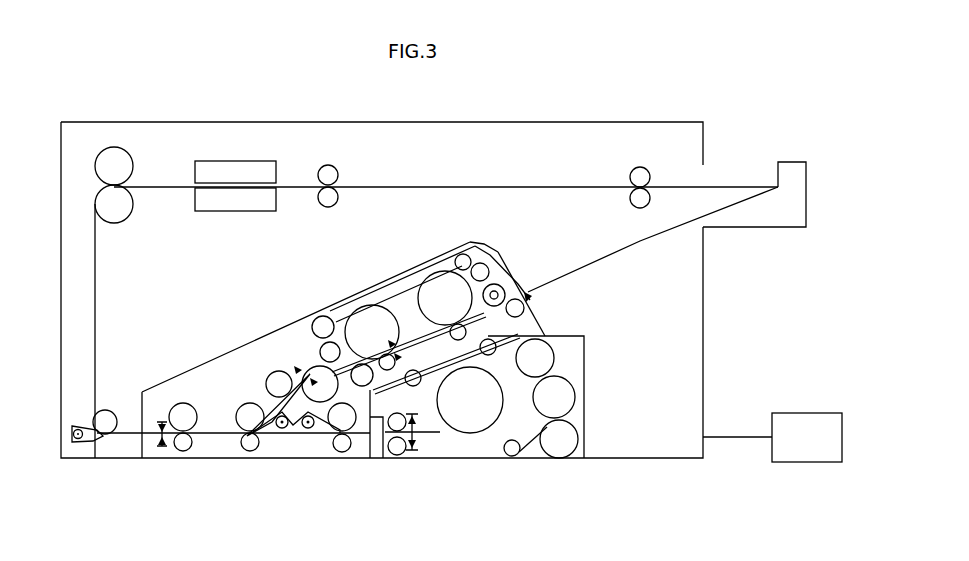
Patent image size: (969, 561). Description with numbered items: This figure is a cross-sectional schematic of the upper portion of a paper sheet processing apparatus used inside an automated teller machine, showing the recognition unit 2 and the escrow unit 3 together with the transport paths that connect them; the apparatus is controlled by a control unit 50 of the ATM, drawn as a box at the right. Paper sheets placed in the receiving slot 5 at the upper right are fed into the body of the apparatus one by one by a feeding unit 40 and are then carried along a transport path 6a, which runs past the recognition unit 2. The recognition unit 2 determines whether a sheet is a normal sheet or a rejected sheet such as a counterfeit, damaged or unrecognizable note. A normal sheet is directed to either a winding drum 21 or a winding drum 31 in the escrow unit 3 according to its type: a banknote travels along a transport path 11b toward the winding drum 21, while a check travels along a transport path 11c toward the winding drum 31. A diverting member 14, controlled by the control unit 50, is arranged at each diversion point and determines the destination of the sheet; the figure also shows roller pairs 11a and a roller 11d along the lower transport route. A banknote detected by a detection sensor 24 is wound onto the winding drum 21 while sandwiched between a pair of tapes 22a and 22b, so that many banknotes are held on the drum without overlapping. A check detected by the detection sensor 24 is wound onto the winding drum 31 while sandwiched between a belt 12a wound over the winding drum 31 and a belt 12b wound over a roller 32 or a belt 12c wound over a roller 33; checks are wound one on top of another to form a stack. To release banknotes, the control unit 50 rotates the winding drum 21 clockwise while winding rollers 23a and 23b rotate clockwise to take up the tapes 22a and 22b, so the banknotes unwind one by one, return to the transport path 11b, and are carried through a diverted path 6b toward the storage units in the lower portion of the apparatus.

The recognition unit 2 is at (250, 162).
The escrow unit 3 is at (580, 373).
The receiving slot 5 is at (750, 178).
The transport path 6a is at (419, 187).
The diverted path 6b is at (88, 449).
The conveyance roller pairs 11a is at (214, 432).
The transport path 11b is at (360, 436).
The transport path 11c is at (268, 405).
The conveyance roller 11d is at (350, 363).
The belt 12a is at (400, 272).
The belt 12b is at (381, 290).
The belt 12c is at (488, 318).
The diverting member 14 is at (78, 424).
The winding drum 21 is at (483, 428).
The tape 22a is at (505, 333).
The tape 22b is at (532, 448).
The winding roller 23a is at (540, 358).
The winding roller 23b is at (565, 440).
The detection sensor 24 is at (388, 458).
The winding drum 31 is at (358, 312).
The roller 32 is at (318, 318).
The roller 33 is at (322, 348).
The feeding unit 40 is at (645, 167).
The control unit 50 is at (783, 413).